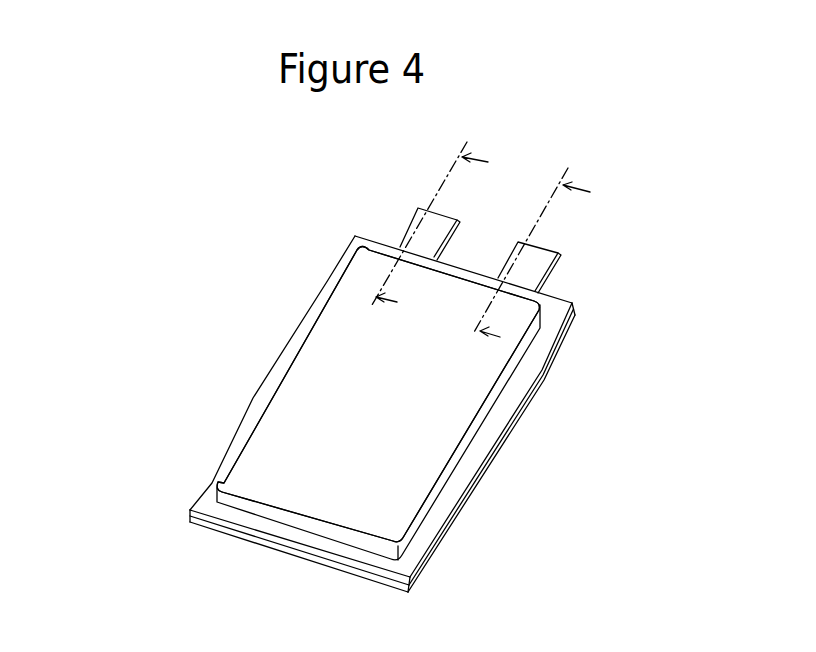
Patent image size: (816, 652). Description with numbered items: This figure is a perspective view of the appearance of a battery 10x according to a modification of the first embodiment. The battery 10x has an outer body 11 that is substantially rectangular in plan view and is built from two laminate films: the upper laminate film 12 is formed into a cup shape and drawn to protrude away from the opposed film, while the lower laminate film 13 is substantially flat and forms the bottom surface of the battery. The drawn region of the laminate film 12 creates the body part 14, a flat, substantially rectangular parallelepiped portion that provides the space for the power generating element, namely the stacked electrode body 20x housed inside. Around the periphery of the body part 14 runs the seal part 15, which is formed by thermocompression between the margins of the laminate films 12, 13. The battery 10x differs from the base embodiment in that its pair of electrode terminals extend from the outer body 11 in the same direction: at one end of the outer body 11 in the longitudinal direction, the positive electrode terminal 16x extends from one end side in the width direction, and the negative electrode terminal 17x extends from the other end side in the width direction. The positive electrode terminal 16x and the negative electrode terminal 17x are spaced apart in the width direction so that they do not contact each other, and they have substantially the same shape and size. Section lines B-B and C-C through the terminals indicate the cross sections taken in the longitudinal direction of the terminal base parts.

The battery 10x is at (641, 185).
The outer body 11 is at (103, 455).
The laminate film 12 is at (207, 490).
The laminate film 13 is at (203, 522).
The body part 14 is at (438, 438).
The seal part 15 is at (437, 513).
The positive electrode terminal 16x is at (412, 216).
The negative electrode terminal 17x is at (542, 269).
The stacked electrode body 20x is at (441, 397).